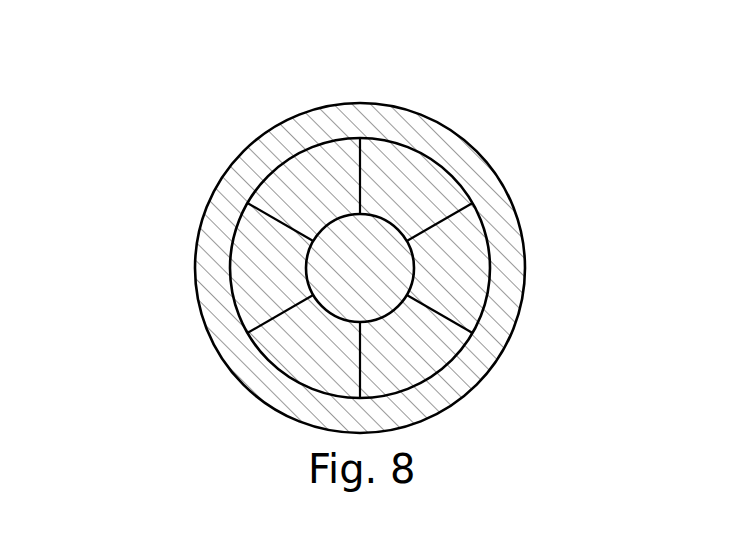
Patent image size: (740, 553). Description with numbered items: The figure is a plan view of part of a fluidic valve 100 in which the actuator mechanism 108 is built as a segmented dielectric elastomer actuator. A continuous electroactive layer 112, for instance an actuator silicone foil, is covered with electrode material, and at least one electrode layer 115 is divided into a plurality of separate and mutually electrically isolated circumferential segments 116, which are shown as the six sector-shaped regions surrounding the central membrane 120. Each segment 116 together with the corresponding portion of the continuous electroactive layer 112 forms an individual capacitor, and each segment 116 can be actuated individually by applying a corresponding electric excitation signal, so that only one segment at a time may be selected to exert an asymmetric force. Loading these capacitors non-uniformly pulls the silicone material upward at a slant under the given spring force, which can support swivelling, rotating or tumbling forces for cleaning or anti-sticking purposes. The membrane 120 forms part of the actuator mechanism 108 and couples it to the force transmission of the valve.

The fluidic valve 100 is at (337, 232).
The actuator mechanism 108 is at (194, 268).
The continuous electroactive layer 112 is at (508, 234).
The electrode layer 115 is at (463, 240).
The circumferential segments 116 is at (260, 232).
The membrane 120 is at (236, 338).